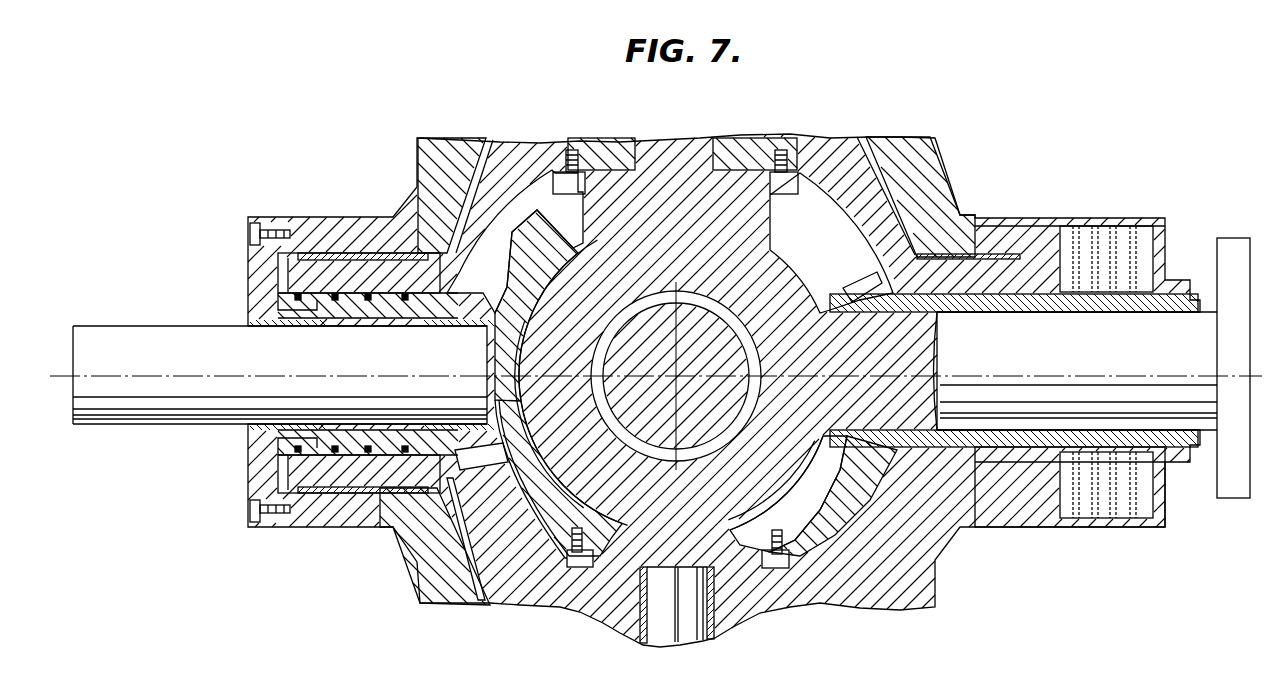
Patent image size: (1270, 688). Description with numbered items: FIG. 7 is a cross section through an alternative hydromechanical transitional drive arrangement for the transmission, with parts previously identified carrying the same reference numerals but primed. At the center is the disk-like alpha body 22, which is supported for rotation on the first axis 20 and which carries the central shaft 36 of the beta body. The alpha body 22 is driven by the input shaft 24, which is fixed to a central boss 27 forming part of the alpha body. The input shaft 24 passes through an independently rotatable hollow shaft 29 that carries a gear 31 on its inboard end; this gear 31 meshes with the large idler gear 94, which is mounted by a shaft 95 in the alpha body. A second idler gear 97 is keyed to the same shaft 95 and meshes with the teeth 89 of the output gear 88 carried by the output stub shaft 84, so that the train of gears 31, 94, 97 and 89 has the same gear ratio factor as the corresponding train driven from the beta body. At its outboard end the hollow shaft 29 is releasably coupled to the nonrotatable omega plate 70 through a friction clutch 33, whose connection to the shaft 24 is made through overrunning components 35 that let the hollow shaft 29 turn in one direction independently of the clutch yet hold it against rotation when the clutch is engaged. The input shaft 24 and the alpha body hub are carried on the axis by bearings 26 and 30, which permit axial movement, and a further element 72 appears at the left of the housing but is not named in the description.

The alpha body 22 is at (822, 137).
The housing end block 72 is at (440, 190).
The bearing 30 is at (394, 254).
The gear 88 is at (518, 412).
The central boss 27 is at (767, 258).
The gear 31 is at (858, 290).
The large idler gear 94 is at (855, 476).
The teeth 89 is at (570, 484).
The second idler gear 97 is at (708, 525).
The omega plate 70 is at (938, 200).
The hollow shaft 29 is at (955, 312).
The friction clutch 33 is at (1102, 232).
The overrunning components 35 is at (1114, 300).
The bearing 26 is at (1005, 490).
The central shaft 36 is at (716, 408).
The shaft 95 is at (700, 638).
The stub shaft 84 is at (360, 402).
The input shaft 24 is at (1080, 402).
The first axis 20 is at (1145, 376).